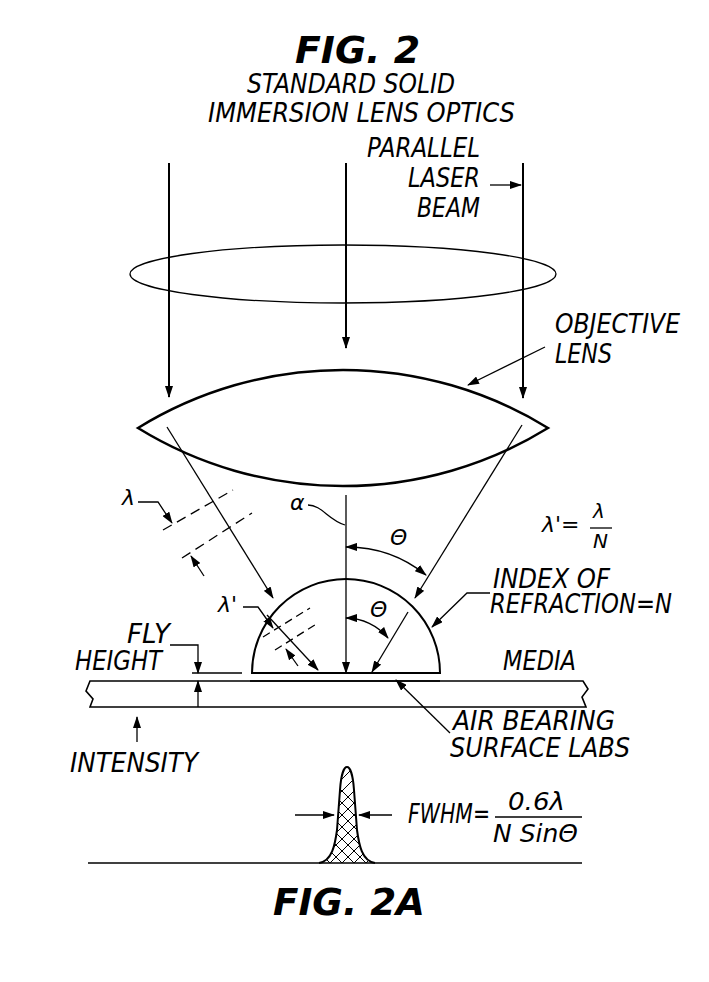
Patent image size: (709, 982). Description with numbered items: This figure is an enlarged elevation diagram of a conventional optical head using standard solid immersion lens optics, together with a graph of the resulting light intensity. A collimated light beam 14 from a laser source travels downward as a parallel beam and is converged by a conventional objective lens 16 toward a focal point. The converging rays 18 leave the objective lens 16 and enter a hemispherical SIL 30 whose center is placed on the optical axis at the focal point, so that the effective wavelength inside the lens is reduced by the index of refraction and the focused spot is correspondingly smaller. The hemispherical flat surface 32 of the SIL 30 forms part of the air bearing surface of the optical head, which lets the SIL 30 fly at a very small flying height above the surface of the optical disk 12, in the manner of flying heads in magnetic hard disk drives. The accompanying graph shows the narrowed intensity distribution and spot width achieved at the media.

The optical disk 12 is at (590, 688).
The collimated light beam 14 is at (130, 273).
The objective lens 16 is at (140, 430).
The converging light beam 18 is at (491, 480).
The hemispherical SIL 30 is at (440, 645).
The hemispherical flat surface 32 is at (265, 681).